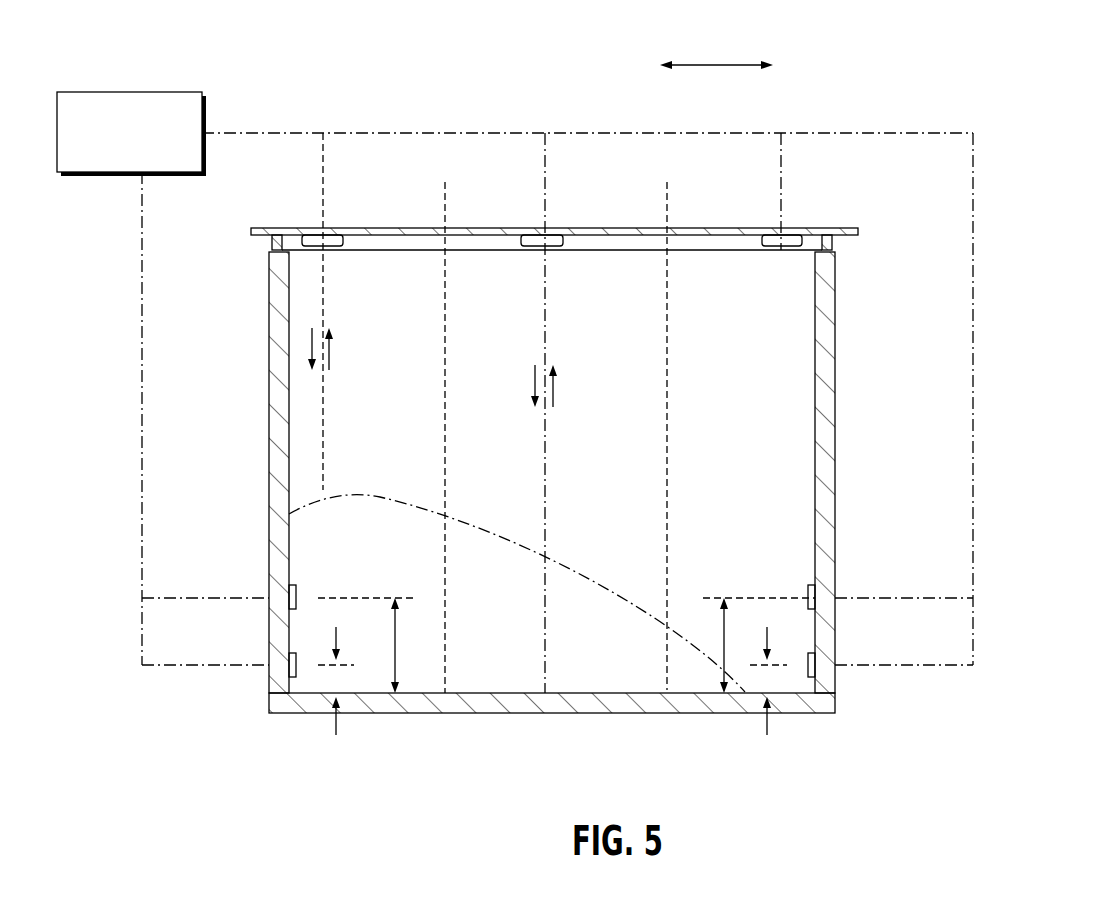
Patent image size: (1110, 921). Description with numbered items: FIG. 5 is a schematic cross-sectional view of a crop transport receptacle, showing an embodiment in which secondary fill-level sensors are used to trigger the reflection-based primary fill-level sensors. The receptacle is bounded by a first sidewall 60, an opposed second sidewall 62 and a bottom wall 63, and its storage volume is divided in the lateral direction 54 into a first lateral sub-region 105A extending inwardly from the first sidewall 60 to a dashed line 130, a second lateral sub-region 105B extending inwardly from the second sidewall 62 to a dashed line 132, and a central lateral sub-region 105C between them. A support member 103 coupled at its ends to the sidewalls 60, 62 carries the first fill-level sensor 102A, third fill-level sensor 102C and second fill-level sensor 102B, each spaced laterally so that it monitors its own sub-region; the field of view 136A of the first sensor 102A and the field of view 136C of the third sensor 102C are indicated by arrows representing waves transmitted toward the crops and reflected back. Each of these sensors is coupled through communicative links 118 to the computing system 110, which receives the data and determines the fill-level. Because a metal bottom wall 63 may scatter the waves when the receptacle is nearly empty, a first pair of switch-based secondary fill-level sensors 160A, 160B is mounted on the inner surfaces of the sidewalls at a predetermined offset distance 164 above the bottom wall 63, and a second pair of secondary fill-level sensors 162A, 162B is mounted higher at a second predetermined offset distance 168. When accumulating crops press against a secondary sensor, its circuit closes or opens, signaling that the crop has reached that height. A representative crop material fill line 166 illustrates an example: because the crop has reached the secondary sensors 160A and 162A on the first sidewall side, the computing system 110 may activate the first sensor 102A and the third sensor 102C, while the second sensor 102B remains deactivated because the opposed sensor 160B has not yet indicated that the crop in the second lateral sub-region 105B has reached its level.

The computing system 110 is at (148, 146).
The communicative links 118 is at (432, 128).
The lateral direction 54 is at (716, 62).
The support member 103 is at (616, 228).
The first fill-level sensor 102A is at (330, 240).
The third fill-level sensor 102C is at (552, 240).
The second fill-level sensor 102B is at (790, 240).
The first sidewall 60 is at (269, 450).
The second sidewall 62 is at (835, 460).
The bottom wall 63 is at (553, 713).
The dashed line 130 is at (445, 337).
The dashed line 132 is at (667, 347).
The field of view 136A is at (322, 297).
The field of view 136C is at (544, 338).
The first lateral sub-region 105A is at (405, 466).
The central lateral sub-region 105C is at (607, 466).
The second lateral sub-region 105B is at (783, 467).
The crop material fill line 166 is at (583, 580).
The secondary fill-level sensor 162A is at (296, 587).
The secondary fill-level sensor 162B is at (808, 587).
The secondary fill-level sensor 160A is at (312, 647).
The secondary fill-level sensor 160B is at (808, 662).
The second predetermined offset distance 168 is at (397, 652).
The predetermined offset distance 164 is at (338, 720).